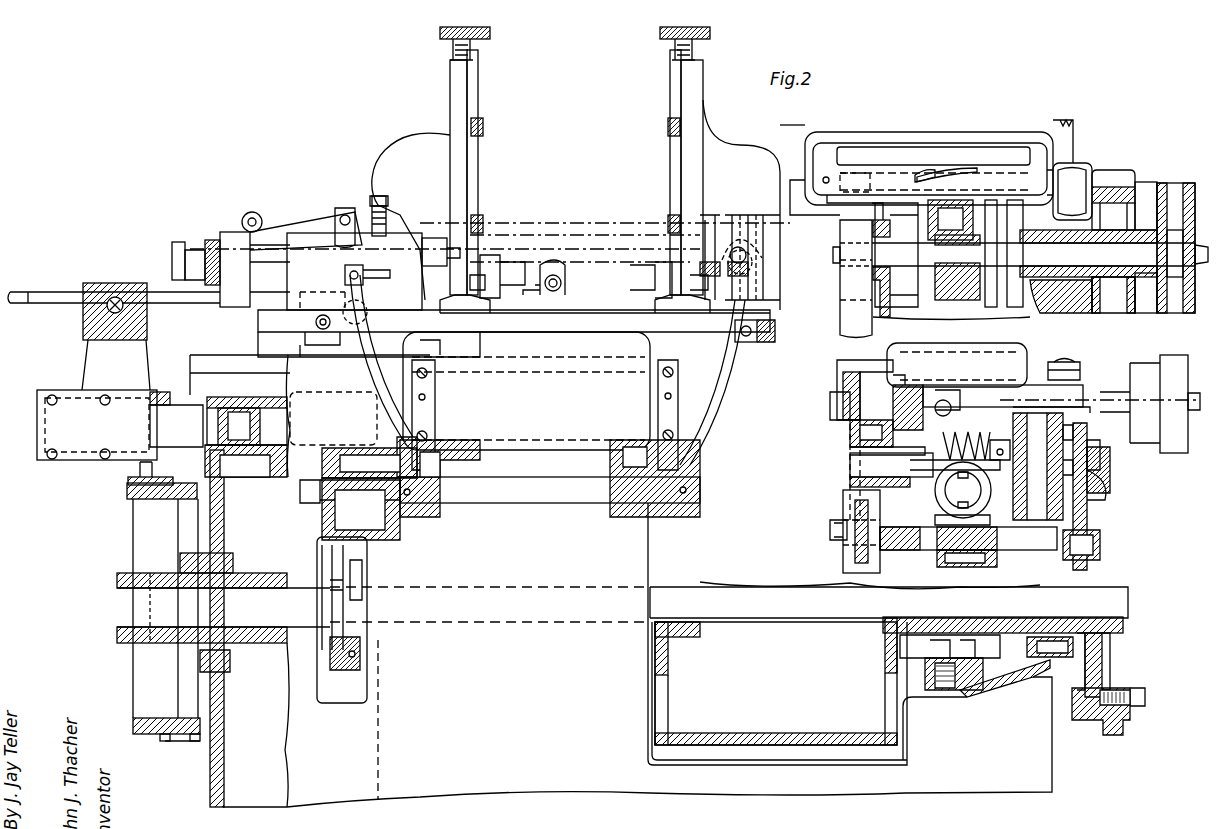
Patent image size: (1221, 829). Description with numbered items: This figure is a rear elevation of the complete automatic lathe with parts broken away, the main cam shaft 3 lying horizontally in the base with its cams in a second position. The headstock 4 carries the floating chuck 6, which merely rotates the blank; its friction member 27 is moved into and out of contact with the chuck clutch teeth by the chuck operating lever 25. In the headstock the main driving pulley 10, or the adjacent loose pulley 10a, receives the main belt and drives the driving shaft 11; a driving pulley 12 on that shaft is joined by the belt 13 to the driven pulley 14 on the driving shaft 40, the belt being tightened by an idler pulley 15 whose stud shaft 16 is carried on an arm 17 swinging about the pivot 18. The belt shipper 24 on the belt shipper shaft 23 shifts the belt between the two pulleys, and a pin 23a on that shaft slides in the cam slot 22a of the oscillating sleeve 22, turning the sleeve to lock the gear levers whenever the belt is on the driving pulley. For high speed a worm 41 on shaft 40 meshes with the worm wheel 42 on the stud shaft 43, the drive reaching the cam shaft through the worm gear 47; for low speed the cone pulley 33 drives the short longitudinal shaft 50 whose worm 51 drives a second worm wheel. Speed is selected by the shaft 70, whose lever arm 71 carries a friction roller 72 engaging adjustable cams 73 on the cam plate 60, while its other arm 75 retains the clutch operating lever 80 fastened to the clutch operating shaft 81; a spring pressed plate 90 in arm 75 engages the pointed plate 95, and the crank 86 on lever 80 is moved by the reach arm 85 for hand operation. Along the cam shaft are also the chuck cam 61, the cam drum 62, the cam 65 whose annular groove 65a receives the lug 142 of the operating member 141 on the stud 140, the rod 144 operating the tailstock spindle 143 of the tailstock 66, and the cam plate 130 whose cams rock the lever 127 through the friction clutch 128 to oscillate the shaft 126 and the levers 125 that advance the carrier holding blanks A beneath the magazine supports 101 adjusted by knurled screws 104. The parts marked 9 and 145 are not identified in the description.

The main cam shaft 3 is at (548, 605).
The headstock 4 is at (800, 132).
The work rotating chuck 6 is at (712, 220).
The drive shaft 9 is at (1208, 408).
The main driving pulley 10 is at (1160, 195).
The loose pulley 10a is at (1145, 185).
The driving shaft 11 is at (1160, 290).
The driving pulley 12 is at (838, 240).
The belt 13 is at (850, 305).
The driven pulley 14 is at (845, 555).
The idler pulley 15 is at (845, 385).
The stud shaft 16 is at (840, 405).
The arm 17 is at (878, 425).
The pivot 18 is at (870, 465).
The oscillating sleeve 22 is at (990, 168).
The cam slot 22a is at (945, 170).
The belt shipper shaft 23 is at (1036, 180).
The pin 23a is at (915, 175).
The belt shipper 24 is at (1118, 172).
The chuck operating lever 25 is at (750, 338).
The friction member 27 is at (740, 225).
The cone pulley 33 is at (1175, 360).
The driving shaft 40 is at (930, 540).
The worm 41 is at (985, 560).
The worm wheel 42 is at (978, 495).
The stud shaft 43 is at (960, 505).
The worm gear 47 is at (983, 680).
The short longitudinal shaft 50 is at (1073, 452).
The worm 51 is at (975, 447).
The cam plate 60 is at (1102, 658).
The cam 61 is at (925, 683).
The cam drum 62 is at (693, 738).
The cam 65 is at (145, 518).
The annular groove 65a is at (185, 742).
The tailstock 66 is at (310, 245).
The shaft 70 is at (1065, 365).
The lever arm 71 is at (1080, 490).
The friction roller 72 is at (1100, 480).
The adjustable cams 73 is at (1130, 718).
The lever 75 is at (975, 385).
The clutch operating lever 80 is at (900, 443).
The clutch operating shaft 81 is at (832, 528).
The reach arm 85 is at (1090, 500).
The crank 86 is at (950, 465).
The spring pressed plate 90 is at (922, 410).
The pointed plate 95 is at (903, 395).
The magazine supports 101 is at (425, 145).
The knurled screw 104 is at (488, 33).
The levers 125 is at (440, 398).
The oscillating shaft 126 is at (545, 497).
The lever 127 is at (365, 650).
The friction clutch 128 is at (385, 548).
The cam plate 130 is at (325, 650).
The stud 140 is at (180, 405).
The operating member 141 is at (98, 356).
The lug 142 is at (130, 480).
The tailstock spindle 143 is at (197, 235).
The rod 144 is at (50, 298).
The clamp 145 is at (95, 318).
The blanks A is at (610, 222).